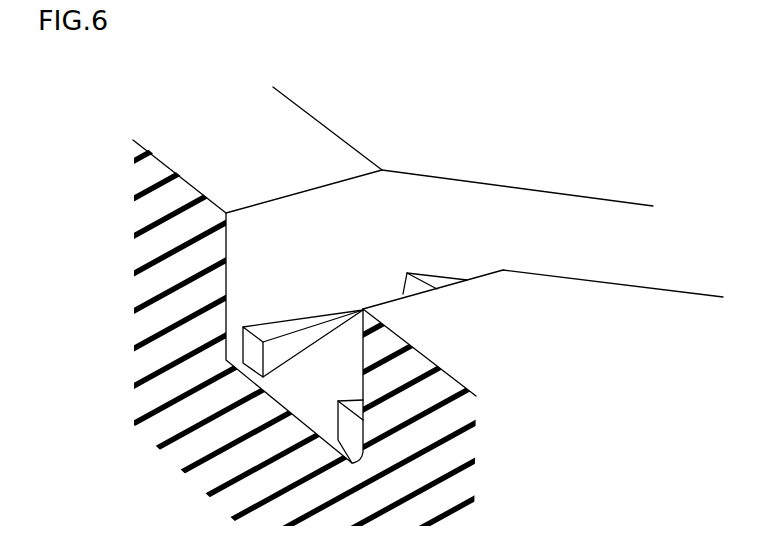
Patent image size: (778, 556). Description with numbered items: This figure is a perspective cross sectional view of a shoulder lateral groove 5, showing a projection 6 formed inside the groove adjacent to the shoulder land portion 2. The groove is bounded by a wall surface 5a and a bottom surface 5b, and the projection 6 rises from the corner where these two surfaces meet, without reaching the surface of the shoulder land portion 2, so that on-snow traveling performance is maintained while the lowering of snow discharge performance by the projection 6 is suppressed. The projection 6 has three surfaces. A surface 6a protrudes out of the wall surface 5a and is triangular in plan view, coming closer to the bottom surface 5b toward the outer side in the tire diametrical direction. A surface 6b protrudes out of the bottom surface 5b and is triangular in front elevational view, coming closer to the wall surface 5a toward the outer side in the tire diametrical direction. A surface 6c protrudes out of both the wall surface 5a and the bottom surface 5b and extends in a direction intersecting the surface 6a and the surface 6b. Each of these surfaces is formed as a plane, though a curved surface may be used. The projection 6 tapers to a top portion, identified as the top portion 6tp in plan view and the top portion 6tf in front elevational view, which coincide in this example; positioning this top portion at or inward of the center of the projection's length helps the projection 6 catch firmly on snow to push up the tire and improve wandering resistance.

The shoulder land portion 2 is at (246, 140).
The shoulder lateral groove 5 is at (654, 257).
The wall surface 5a is at (402, 230).
The bottom surface 5b is at (300, 416).
The projection 6 is at (438, 277).
The surface 6a is at (288, 332).
The surface 6b is at (273, 355).
The surface 6c is at (243, 340).
The top portion 6tf is at (263, 340).
The top portion 6tp is at (226, 361).